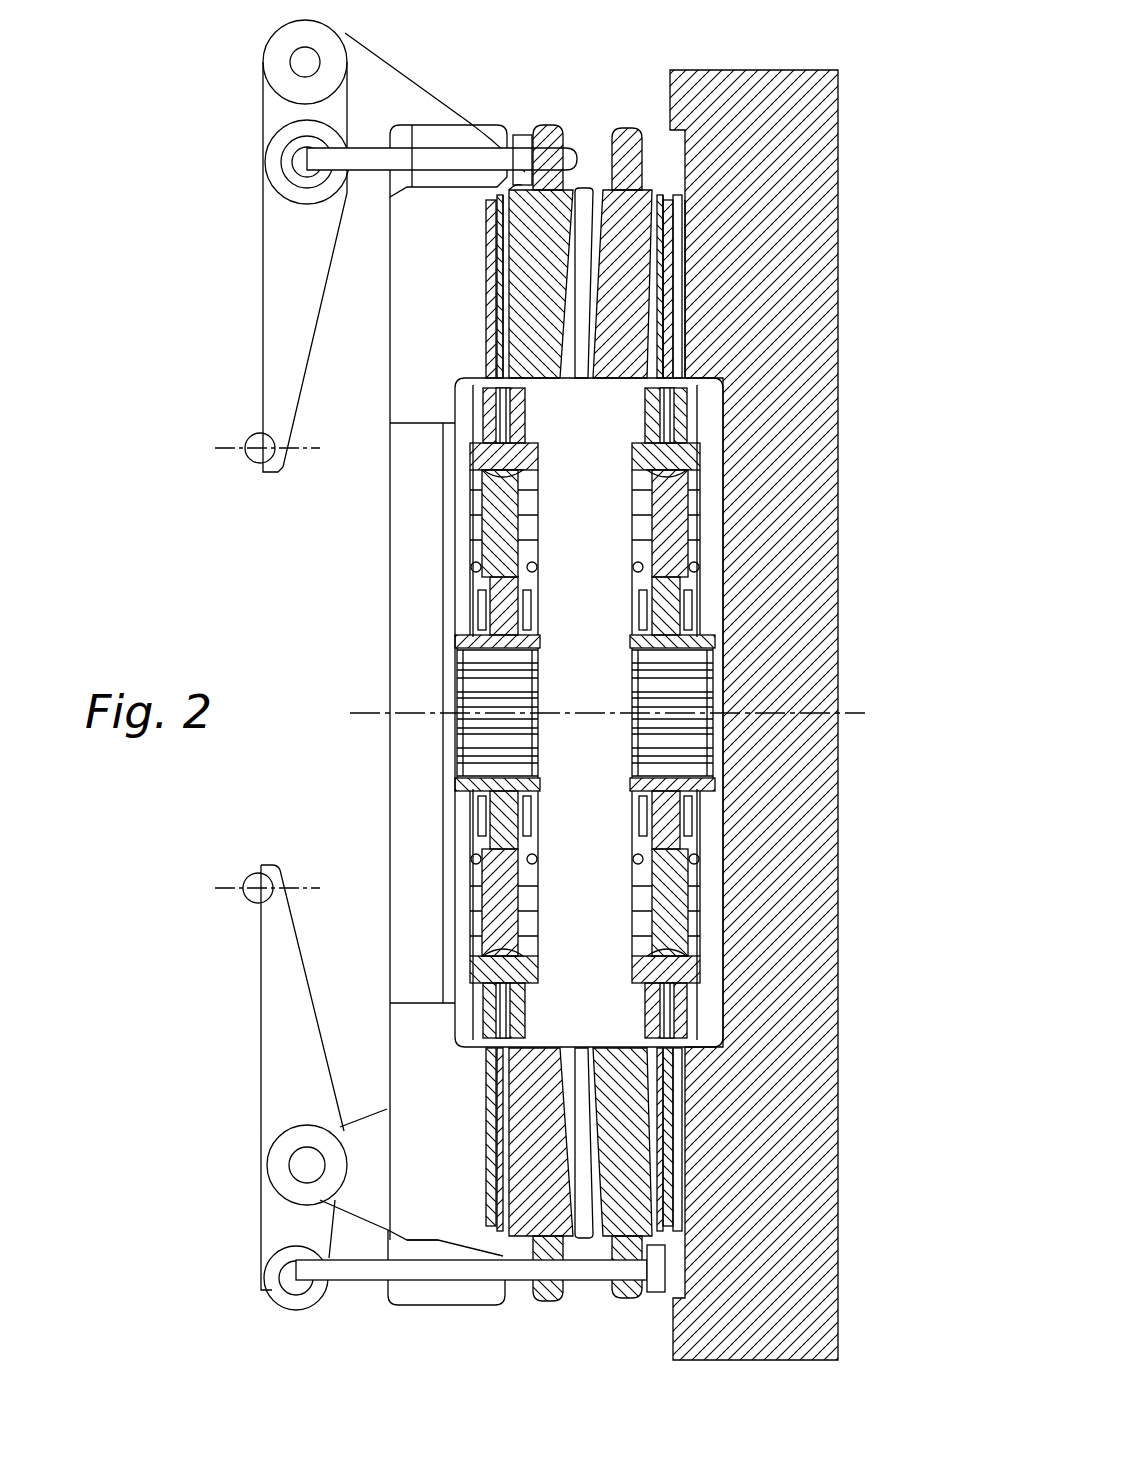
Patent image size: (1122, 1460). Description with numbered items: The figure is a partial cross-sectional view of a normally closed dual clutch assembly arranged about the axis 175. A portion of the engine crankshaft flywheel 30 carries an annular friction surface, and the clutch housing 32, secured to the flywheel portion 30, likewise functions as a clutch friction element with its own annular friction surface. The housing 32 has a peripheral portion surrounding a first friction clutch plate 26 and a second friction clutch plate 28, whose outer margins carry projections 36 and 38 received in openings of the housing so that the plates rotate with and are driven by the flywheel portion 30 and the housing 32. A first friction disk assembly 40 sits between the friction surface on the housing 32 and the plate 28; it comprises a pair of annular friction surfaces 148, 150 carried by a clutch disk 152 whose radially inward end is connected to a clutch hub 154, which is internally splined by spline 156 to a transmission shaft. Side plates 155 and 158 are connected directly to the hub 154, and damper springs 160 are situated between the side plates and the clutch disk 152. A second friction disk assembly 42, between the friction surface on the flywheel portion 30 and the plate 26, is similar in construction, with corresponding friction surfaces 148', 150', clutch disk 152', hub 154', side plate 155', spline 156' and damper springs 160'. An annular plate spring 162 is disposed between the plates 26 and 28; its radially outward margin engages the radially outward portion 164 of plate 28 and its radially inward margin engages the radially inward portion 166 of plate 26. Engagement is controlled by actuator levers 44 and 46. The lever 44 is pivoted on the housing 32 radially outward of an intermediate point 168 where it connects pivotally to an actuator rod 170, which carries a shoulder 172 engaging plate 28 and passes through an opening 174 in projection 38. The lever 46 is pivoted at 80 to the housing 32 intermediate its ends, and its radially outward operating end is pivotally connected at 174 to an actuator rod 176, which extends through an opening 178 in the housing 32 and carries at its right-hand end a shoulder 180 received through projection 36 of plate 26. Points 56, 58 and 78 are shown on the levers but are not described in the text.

The first friction clutch plate 26 is at (653, 185).
The second friction clutch plate 28 is at (518, 200).
The engine crankshaft flywheel portion 30 is at (738, 72).
The clutch housing 32 is at (418, 1345).
The projection 36 is at (612, 130).
The projection 38 is at (546, 175).
The first friction disk assembly 40 is at (488, 325).
The second friction disk assembly 42 is at (680, 252).
The clutch actuator lever 44 is at (280, 300).
The actuator lever 46 is at (280, 1030).
The pivot 56 is at (260, 448).
The roller 58 is at (305, 62).
The pivot 78 is at (258, 888).
The pivot 80 is at (305, 1165).
The annular friction surface 148 is at (456, 713).
The annular friction surface 148' is at (800, 286).
The annular friction surface 150 is at (536, 689).
The annular friction surface 150' is at (631, 696).
The clutch disk 152 is at (431, 711).
The clutch disk 152' is at (637, 713).
The clutch hub 154 is at (432, 692).
The clutch hub 154' is at (785, 683).
The side plate 155 is at (431, 713).
The side plate 155' is at (786, 713).
The spline 156 is at (431, 714).
The spline 156' is at (786, 716).
The side plate 158 is at (535, 592).
The damper springs 160 is at (524, 712).
The damper springs 160' is at (819, 712).
The annular plate spring 162 is at (583, 190).
The radially outward portion of clutch plate 164 is at (572, 207).
The radially inward portion of clutch plate 166 is at (537, 298).
The intermediate point 168 is at (300, 162).
The actuator rod 170 is at (368, 160).
The shoulder 172 is at (520, 173).
The opening 174 is at (412, 187).
The axis 175 is at (862, 713).
The actuator rod 176 is at (517, 1268).
The opening 178 is at (437, 1240).
The shoulder 180 is at (657, 1282).